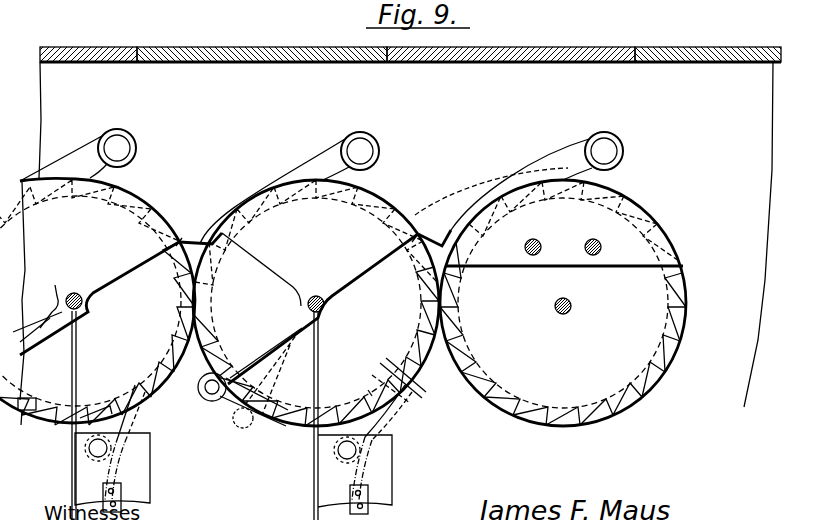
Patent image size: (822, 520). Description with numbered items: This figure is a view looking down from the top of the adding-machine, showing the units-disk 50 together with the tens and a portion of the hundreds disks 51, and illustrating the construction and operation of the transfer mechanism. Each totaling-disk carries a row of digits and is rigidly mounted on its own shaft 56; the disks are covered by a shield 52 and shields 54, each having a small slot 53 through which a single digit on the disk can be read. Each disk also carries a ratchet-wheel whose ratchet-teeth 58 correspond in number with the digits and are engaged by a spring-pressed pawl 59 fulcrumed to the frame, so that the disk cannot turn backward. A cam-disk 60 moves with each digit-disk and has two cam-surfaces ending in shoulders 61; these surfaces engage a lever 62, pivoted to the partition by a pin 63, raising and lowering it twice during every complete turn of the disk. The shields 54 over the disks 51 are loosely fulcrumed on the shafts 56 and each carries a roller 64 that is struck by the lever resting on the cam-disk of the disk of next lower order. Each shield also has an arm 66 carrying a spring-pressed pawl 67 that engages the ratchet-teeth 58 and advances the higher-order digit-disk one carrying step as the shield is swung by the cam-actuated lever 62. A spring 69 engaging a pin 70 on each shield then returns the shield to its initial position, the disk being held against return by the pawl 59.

The units totaling-disk 50 is at (682, 318).
The totaling-disks 51 is at (404, 390).
The shield 52 is at (648, 230).
The slot 53 is at (568, 182).
The shield 54 is at (225, 302).
The shaft 56 is at (84, 300).
The ratchet-teeth 58 is at (622, 420).
The spring-pressed pawl 59 is at (140, 414).
The cam-disk 60 is at (368, 392).
The shoulders 61 is at (412, 374).
The lever 62 is at (84, 150).
The pin 63 is at (120, 148).
The roller 64 is at (182, 238).
The arm 66 is at (268, 345).
The spring-pressed pawl 67 is at (226, 410).
The spring 69 is at (78, 380).
The pin 70 is at (312, 323).